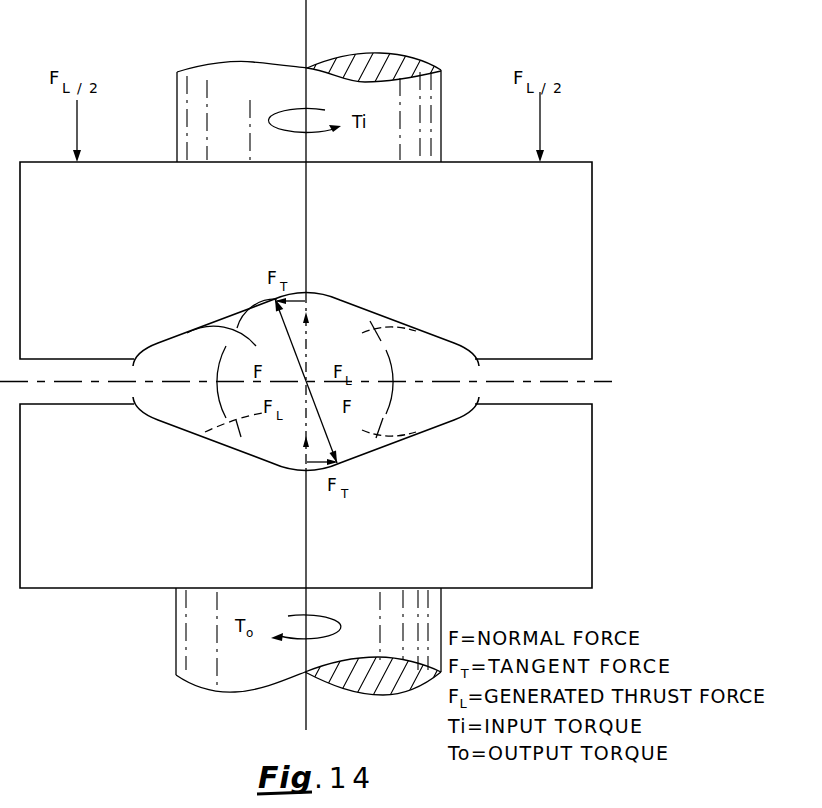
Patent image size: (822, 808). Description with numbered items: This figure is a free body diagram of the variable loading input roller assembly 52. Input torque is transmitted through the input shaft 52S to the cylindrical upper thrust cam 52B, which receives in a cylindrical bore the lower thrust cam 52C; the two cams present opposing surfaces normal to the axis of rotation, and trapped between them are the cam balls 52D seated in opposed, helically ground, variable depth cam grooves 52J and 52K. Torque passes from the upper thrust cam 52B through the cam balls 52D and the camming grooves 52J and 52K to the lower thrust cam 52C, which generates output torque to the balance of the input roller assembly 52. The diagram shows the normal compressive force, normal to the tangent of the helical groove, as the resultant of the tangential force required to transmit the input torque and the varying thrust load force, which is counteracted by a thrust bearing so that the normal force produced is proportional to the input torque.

The input roller assembly 52 is at (374, 621).
The input shaft 52S is at (418, 53).
The upper thrust cam 52B is at (536, 246).
The lower thrust cam 52C is at (530, 524).
The cam balls 52D is at (334, 297).
The cam groove 52J is at (384, 316).
The cam groove 52K is at (387, 446).